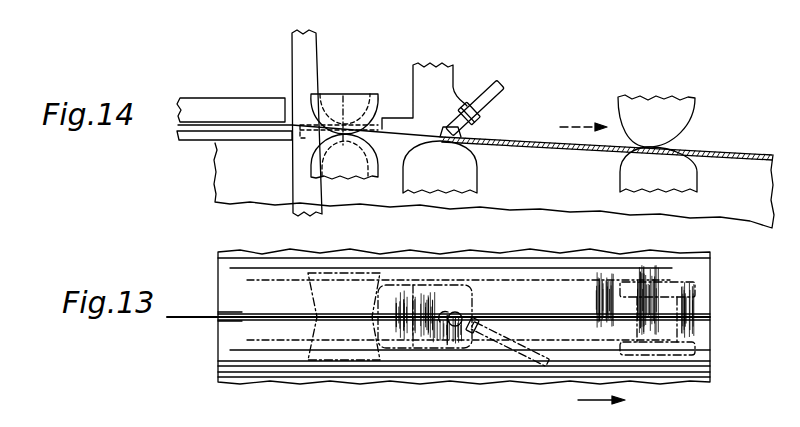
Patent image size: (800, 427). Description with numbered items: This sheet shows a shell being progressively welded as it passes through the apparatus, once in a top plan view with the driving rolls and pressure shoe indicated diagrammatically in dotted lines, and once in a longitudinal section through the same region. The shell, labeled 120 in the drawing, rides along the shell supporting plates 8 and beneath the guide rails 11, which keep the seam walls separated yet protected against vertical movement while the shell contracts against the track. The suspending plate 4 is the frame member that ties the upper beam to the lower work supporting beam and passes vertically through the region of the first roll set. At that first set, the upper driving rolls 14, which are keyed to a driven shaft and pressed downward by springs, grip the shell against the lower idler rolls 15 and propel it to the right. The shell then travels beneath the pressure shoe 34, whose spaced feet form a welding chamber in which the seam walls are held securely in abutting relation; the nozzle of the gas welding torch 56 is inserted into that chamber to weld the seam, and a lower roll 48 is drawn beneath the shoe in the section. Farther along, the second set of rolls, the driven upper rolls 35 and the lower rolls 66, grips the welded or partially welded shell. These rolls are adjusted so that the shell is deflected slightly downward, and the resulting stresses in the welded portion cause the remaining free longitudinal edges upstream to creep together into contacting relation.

In FIG. 14, the plate 4 is at (312, 49).
In FIG. 13, the plate 4 is at (178, 316).
In FIG. 14, the shell supporting plates 8 is at (242, 137).
In FIG. 14, the guide rails 11 is at (219, 104).
In FIG. 14, the upper driving rolls 14 is at (351, 96).
In FIG. 13, the upper driving rolls 14 is at (338, 276).
In FIG. 14, the lower rolls 15 is at (380, 139).
In FIG. 14, the pressure shoe 34 is at (447, 86).
In FIG. 13, the pressure shoe 34 is at (458, 286).
In FIG. 14, the upper rolls 35 is at (688, 119).
In FIG. 13, the upper rolls 35 is at (672, 289).
In FIG. 14, the lower backing roller 48 is at (466, 172).
In FIG. 14, the gas welding torch 56 is at (492, 96).
In FIG. 13, the gas welding torch 56 is at (495, 326).
In FIG. 14, the lower rolls 66 is at (690, 173).
In FIG. 14, the support base 120 is at (494, 185).
In FIG. 13, the support base 120 is at (712, 302).